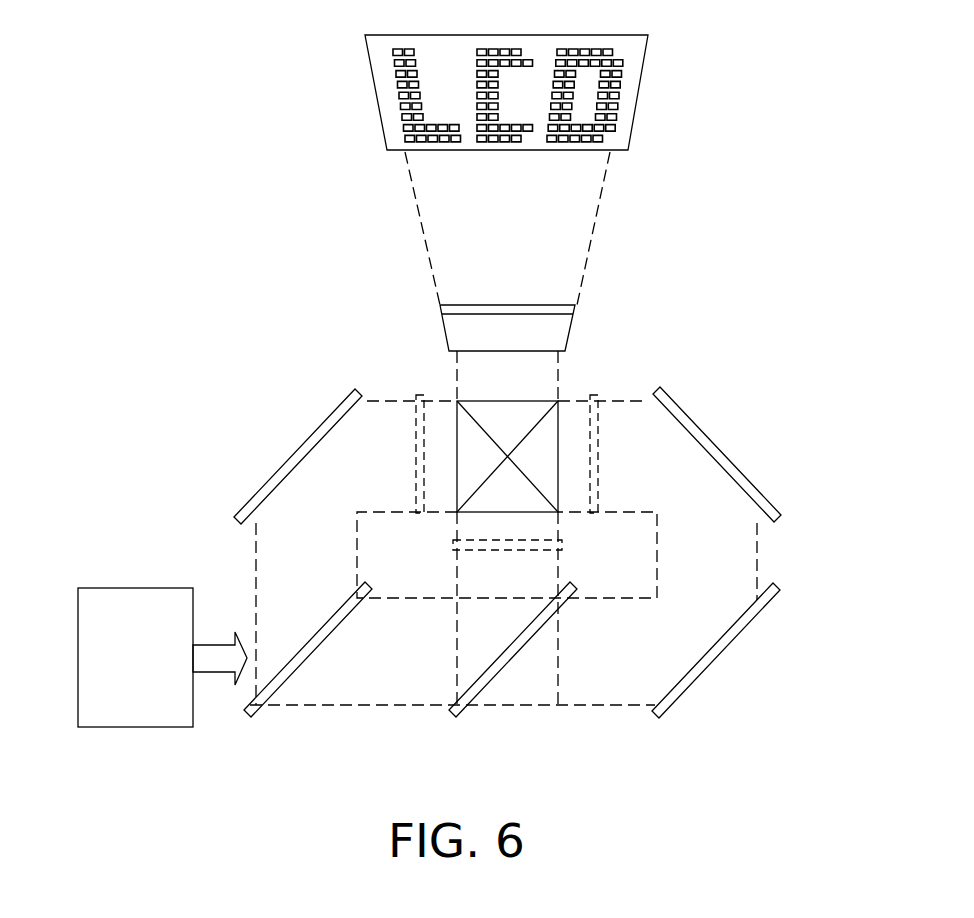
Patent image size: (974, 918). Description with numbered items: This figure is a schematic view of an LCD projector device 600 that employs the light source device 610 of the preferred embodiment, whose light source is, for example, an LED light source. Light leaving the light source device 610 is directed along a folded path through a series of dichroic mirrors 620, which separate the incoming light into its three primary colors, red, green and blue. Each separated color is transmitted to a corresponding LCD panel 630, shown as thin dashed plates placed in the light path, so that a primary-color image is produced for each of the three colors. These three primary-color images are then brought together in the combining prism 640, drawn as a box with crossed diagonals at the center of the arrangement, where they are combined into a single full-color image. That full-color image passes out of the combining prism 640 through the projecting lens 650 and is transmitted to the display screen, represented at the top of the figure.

The LCD projector device 600 is at (953, 193).
The light source device 610 is at (135, 588).
The dichroic mirror 620 is at (295, 450).
The LCD panel 630 is at (420, 390).
The combining prism 640 is at (475, 400).
The projecting lens 650 is at (568, 333).